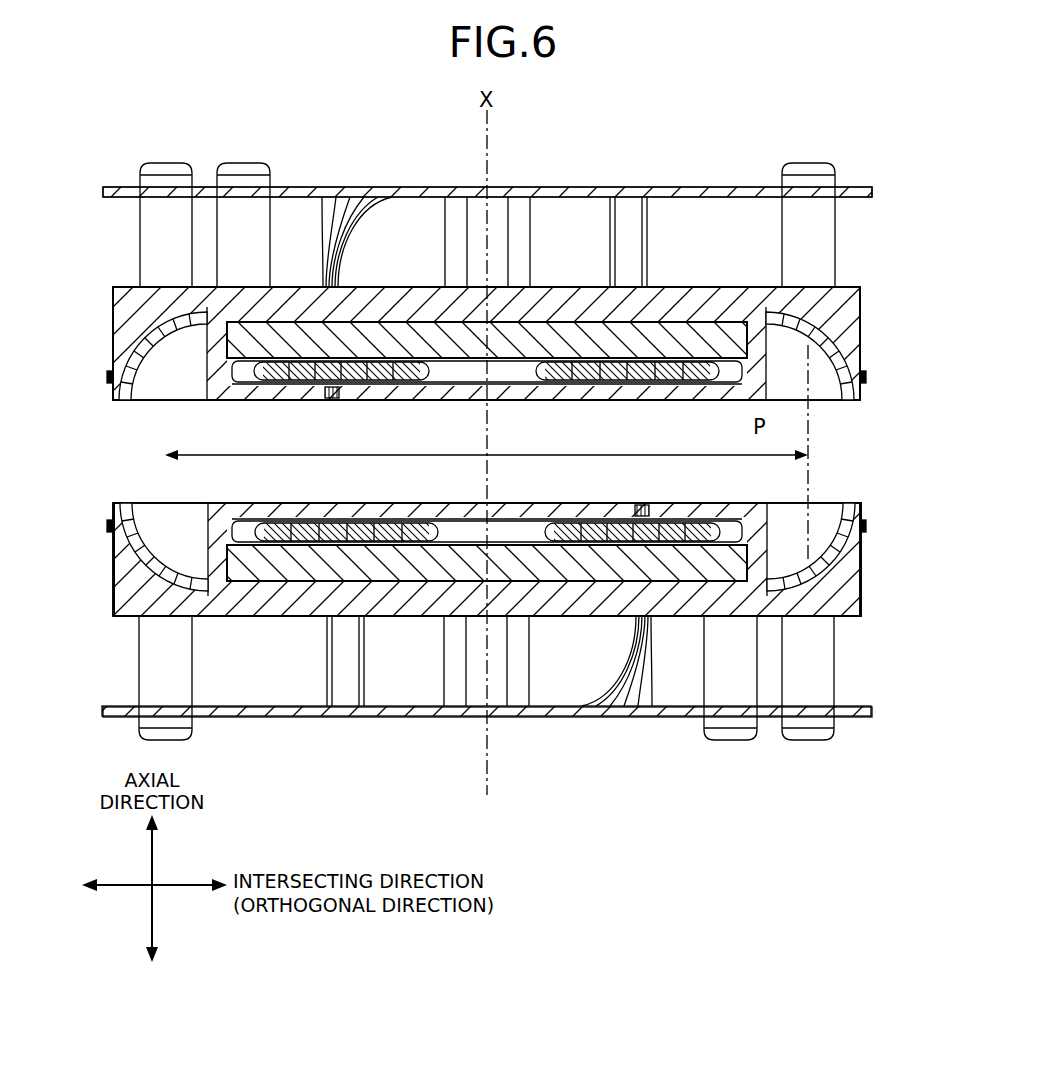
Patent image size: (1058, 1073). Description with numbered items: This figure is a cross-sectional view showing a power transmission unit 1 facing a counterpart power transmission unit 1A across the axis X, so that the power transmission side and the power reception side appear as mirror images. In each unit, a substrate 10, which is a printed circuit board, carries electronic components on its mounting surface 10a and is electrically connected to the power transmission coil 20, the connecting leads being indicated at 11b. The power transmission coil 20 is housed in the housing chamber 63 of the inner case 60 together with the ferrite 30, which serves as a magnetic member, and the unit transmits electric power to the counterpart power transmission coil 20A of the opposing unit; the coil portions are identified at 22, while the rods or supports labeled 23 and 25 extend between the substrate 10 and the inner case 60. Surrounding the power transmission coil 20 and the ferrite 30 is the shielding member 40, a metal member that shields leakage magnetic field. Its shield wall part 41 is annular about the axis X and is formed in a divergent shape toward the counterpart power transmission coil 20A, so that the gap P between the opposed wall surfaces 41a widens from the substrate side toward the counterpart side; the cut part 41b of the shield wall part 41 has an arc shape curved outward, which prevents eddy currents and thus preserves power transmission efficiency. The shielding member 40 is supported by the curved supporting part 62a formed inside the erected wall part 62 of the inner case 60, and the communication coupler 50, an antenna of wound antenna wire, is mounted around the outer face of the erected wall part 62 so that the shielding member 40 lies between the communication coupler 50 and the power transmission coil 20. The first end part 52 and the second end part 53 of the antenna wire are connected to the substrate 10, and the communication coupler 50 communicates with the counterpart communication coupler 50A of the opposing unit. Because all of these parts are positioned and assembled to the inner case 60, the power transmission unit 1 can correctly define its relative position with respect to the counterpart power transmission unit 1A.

The power transmission unit 1 is at (848, 788).
The counterpart power transmission unit 1A is at (847, 143).
The substrate 10 is at (105, 198).
The mounting surface 10a is at (487, 452).
The lead wires 11b is at (322, 232).
The power transmission coil 20 is at (420, 503).
The counterpart power transmission coil 20A is at (420, 400).
The coil portion 22 is at (487, 451).
The rod 23 is at (505, 240).
The rod 25 is at (470, 240).
The ferrite 30 is at (498, 398).
The shielding member 40 is at (145, 400).
The shield wall part 41 is at (502, 451).
The wall surfaces 41a is at (486, 451).
The cut part 41b is at (486, 451).
The communication coupler 50 is at (107, 526).
The counterpart communication coupler 50A is at (107, 377).
The first end part 52 is at (647, 258).
The second end part 53 is at (610, 255).
The inner case 60 is at (700, 409).
The erected wall part 62 is at (113, 354).
The supporting part 62a is at (150, 333).
The housing chamber 63 is at (486, 451).